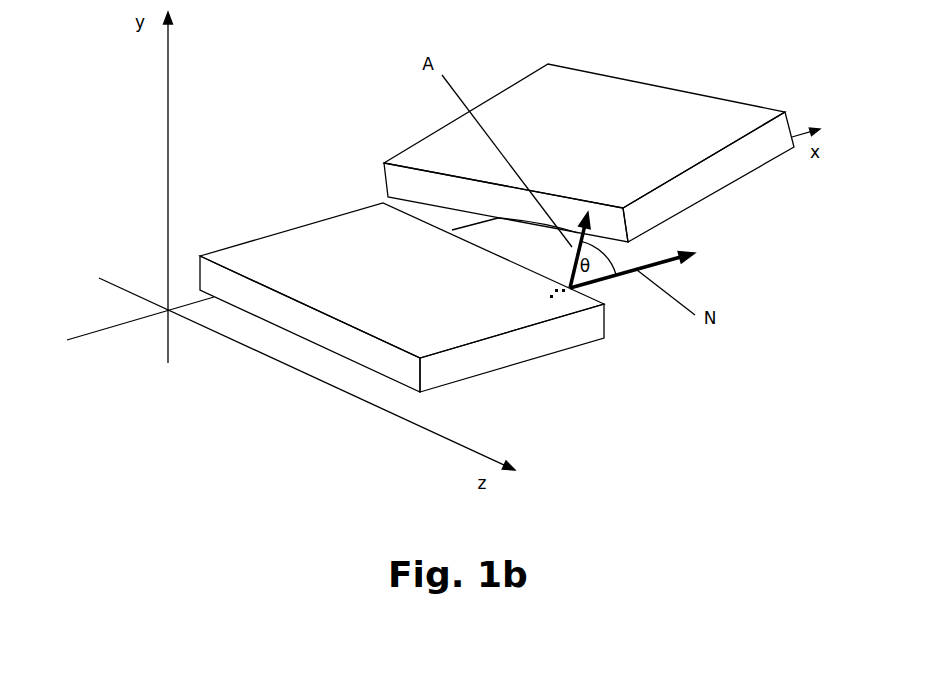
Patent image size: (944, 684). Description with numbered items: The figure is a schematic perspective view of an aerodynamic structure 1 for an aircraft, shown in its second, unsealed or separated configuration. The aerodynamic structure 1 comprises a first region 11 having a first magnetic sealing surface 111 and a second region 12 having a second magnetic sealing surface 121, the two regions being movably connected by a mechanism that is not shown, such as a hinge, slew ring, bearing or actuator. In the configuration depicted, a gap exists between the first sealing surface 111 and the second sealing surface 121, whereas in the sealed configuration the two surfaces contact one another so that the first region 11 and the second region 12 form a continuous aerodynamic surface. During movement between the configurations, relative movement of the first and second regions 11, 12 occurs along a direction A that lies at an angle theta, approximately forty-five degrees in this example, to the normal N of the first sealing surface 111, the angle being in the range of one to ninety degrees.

The aerodynamic structure 1 is at (324, 100).
The first region 11 is at (410, 289).
The first magnetic sealing surface 111 is at (594, 322).
The second region 12 is at (596, 139).
The second magnetic sealing surface 121 is at (412, 185).